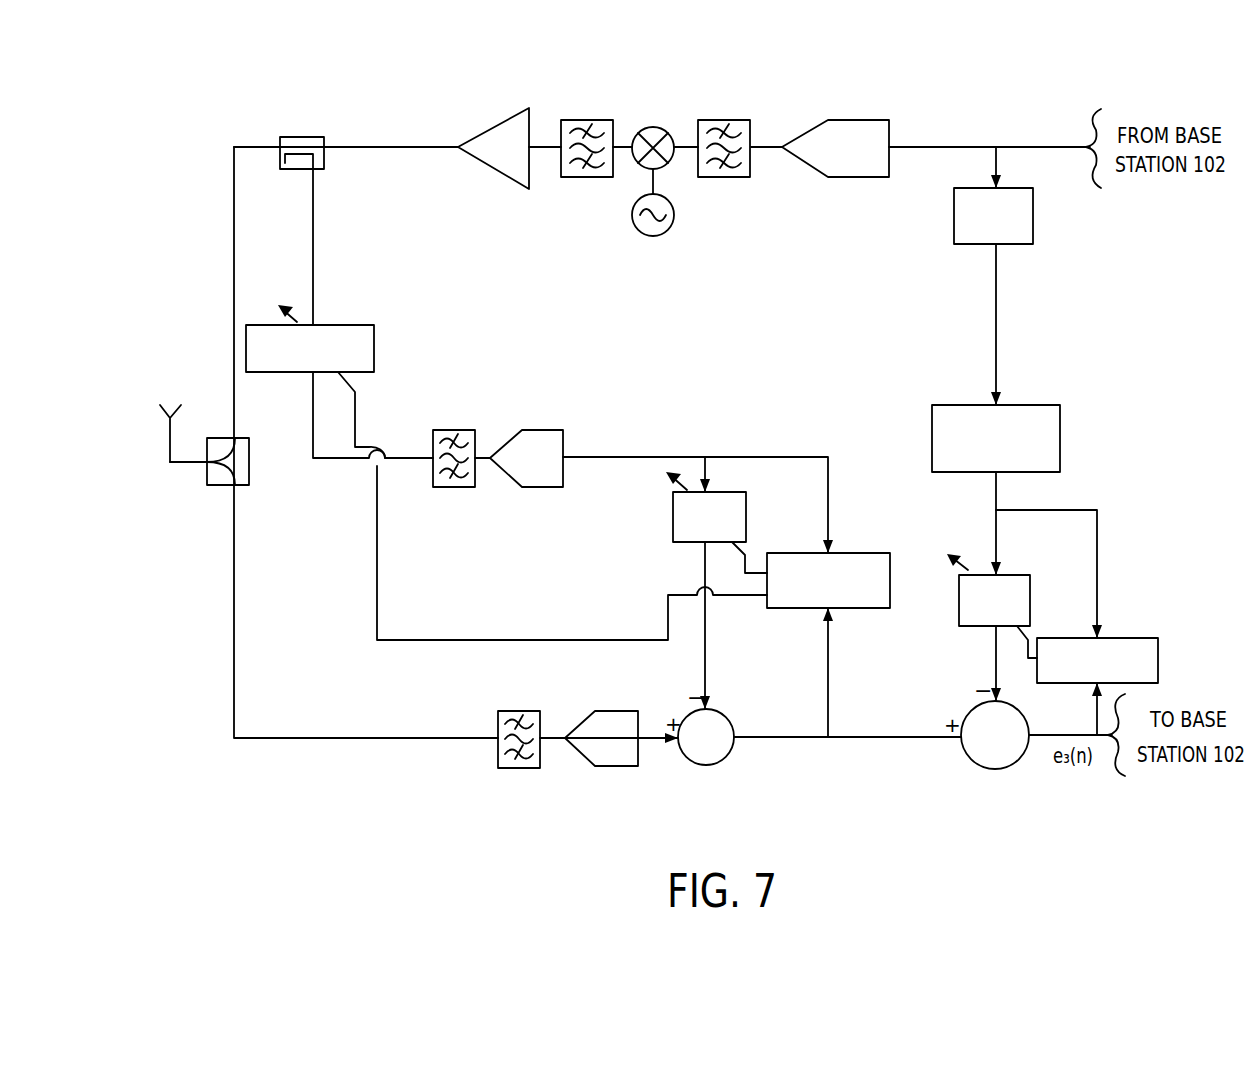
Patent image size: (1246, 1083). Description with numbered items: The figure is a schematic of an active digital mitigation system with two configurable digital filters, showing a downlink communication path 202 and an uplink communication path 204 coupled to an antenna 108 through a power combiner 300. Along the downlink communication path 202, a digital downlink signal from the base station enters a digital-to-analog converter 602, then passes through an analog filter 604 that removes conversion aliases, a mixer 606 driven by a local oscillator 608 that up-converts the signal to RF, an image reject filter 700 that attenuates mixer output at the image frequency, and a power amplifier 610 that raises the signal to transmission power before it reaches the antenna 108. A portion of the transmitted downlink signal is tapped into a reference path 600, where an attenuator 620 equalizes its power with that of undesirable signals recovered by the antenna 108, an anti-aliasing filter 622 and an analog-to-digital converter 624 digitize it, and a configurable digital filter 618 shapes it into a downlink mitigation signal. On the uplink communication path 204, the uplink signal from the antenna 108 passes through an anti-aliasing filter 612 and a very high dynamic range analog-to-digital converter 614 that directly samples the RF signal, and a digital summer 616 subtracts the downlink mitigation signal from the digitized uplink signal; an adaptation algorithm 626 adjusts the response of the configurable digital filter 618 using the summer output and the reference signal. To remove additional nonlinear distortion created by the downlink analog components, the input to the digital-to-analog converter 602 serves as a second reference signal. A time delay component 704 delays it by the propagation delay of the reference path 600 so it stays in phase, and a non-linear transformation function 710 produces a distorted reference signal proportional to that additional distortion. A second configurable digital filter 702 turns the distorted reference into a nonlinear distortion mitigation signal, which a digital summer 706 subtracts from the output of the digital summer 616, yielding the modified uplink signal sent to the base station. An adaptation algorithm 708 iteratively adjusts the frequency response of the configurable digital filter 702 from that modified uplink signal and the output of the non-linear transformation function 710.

The antenna 108 is at (170, 398).
The downlink communication path 202 is at (400, 118).
The uplink communication path 204 is at (355, 772).
The power combiner 300 is at (251, 466).
The reference path 600 is at (358, 478).
The digital-to-analog converter 602 is at (852, 120).
The analog filter 604 is at (726, 120).
The mixer 606 is at (656, 125).
The local oscillator 608 is at (649, 238).
The power amplifier 610 is at (497, 122).
The anti-aliasing filter 612 is at (545, 712).
The analog-to-digital converter 614 is at (640, 711).
The digital summer 616 is at (733, 712).
The configurable digital filter 618 is at (673, 518).
The attenuator 620 is at (343, 325).
The anti-aliasing filter 622 is at (453, 430).
The analog-to-digital converter 624 is at (541, 430).
The adaptation algorithm 626 is at (862, 553).
The image reject filter 700 is at (592, 120).
The configurable digital filter 702 is at (1033, 588).
The time delay component 704 is at (1033, 228).
The digital summer 706 is at (989, 771).
The adaptation algorithm 708 is at (1131, 638).
The non-linear transformation function 710 is at (1022, 405).